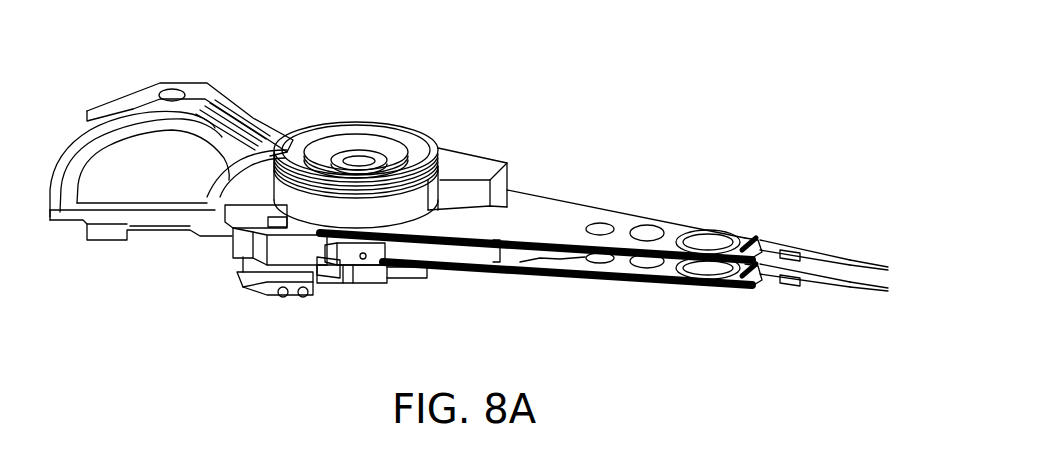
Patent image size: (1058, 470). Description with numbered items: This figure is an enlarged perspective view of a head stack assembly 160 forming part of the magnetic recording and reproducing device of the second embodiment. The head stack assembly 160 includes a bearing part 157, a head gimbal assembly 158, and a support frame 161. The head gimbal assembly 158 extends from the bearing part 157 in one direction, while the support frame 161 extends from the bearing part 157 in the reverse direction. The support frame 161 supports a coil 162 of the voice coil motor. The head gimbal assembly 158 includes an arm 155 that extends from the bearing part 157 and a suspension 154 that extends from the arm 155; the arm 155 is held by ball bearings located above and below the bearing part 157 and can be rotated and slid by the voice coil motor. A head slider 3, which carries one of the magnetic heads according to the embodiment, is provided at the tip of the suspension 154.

The head slider 3 is at (853, 262).
The suspension 154 is at (818, 253).
The arm 155 is at (670, 237).
The bearing part 157 is at (373, 97).
The head gimbal assembly 158 is at (600, 193).
The head stack assembly 160 is at (563, 120).
The support frame 161 is at (203, 104).
The coil 162 is at (148, 204).